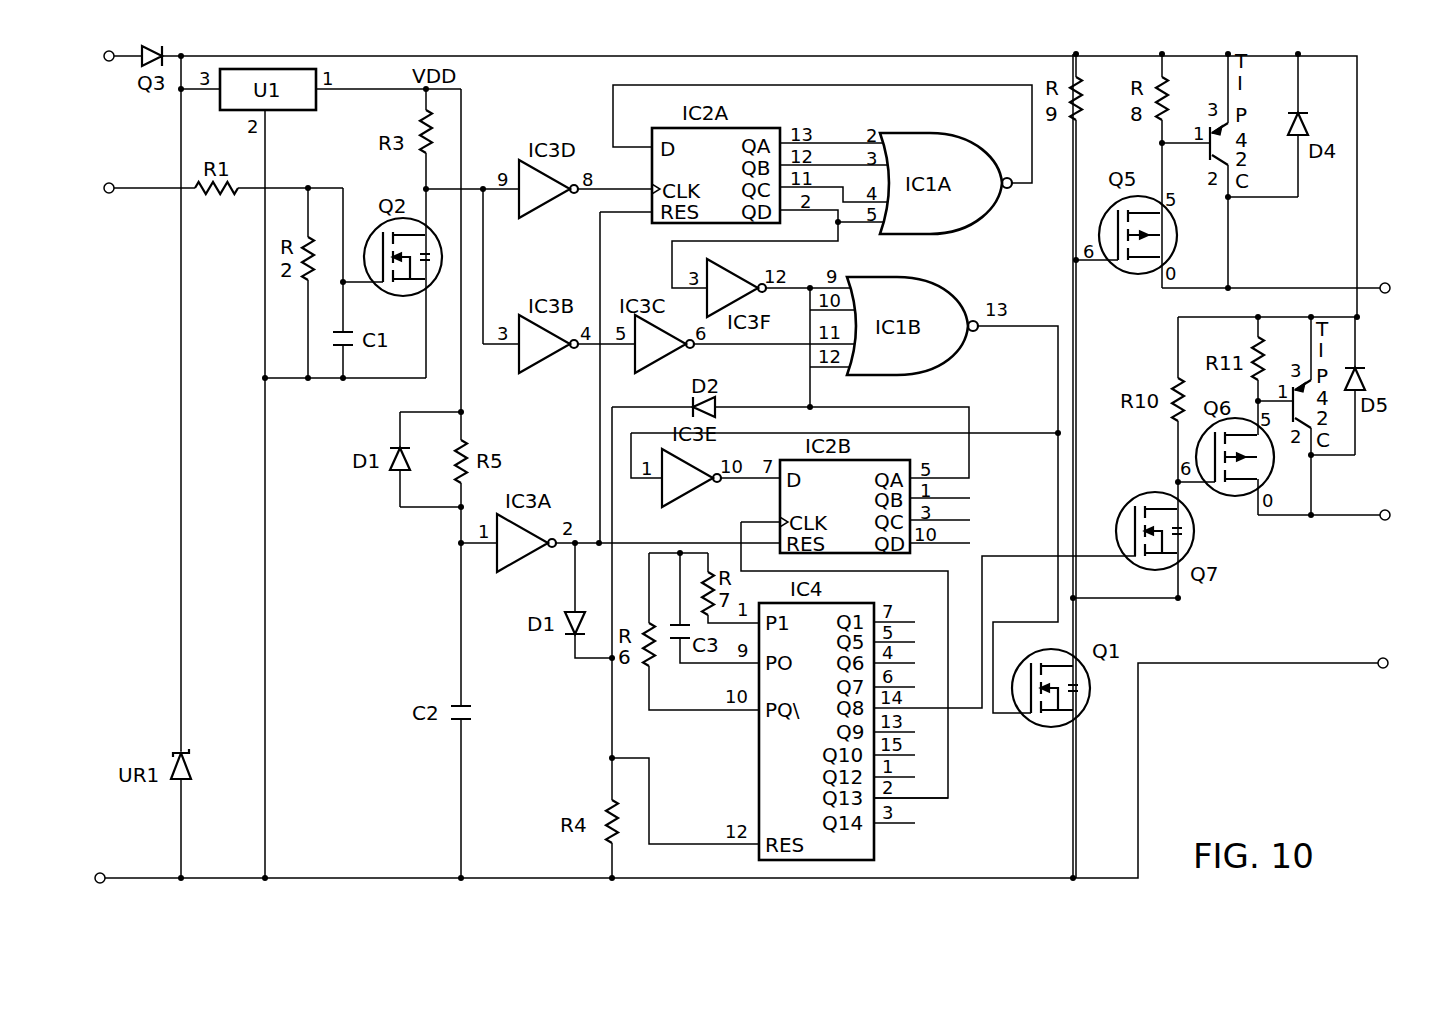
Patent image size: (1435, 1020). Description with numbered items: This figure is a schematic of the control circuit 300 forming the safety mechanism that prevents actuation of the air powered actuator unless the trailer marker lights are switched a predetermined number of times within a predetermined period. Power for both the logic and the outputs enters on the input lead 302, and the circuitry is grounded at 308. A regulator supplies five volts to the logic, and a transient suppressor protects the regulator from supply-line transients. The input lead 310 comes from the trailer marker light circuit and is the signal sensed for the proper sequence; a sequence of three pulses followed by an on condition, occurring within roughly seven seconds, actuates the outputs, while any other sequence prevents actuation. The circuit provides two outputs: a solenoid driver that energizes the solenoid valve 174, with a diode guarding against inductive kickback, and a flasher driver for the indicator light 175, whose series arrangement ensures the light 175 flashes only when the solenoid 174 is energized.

The control circuit 300 is at (1386, 152).
The input lead 302 is at (134, 62).
The input lead 310 is at (136, 188).
The ground 308 is at (98, 873).
The solenoid valve 174 is at (1390, 284).
The indicator light 175 is at (1389, 521).